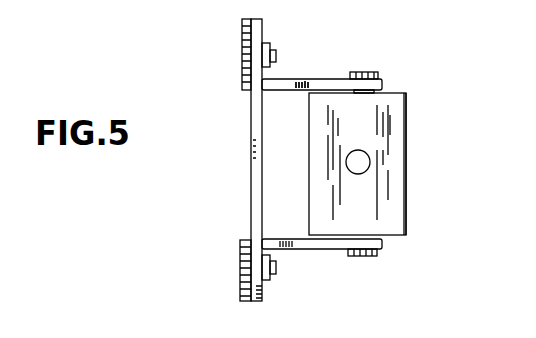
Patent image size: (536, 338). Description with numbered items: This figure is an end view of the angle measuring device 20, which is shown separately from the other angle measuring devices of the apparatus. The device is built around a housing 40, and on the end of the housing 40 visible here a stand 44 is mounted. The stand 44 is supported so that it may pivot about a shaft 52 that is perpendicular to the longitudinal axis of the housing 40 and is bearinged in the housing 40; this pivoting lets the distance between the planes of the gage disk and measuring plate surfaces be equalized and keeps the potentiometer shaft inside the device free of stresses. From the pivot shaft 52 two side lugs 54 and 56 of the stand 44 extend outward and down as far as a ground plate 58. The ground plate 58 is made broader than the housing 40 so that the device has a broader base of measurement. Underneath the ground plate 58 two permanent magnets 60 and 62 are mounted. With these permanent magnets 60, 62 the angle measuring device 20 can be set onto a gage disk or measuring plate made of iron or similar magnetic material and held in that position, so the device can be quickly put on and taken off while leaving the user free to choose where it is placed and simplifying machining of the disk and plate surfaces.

The angle measuring device 20 is at (407, 143).
The housing 40 is at (406, 198).
The stand 44 is at (306, 79).
The shaft 52 is at (378, 84).
The side lug 54 is at (272, 83).
The side lug 56 is at (323, 249).
The ground plate 58 is at (252, 167).
The permanent magnet 60 is at (246, 53).
The permanent magnet 62 is at (243, 262).